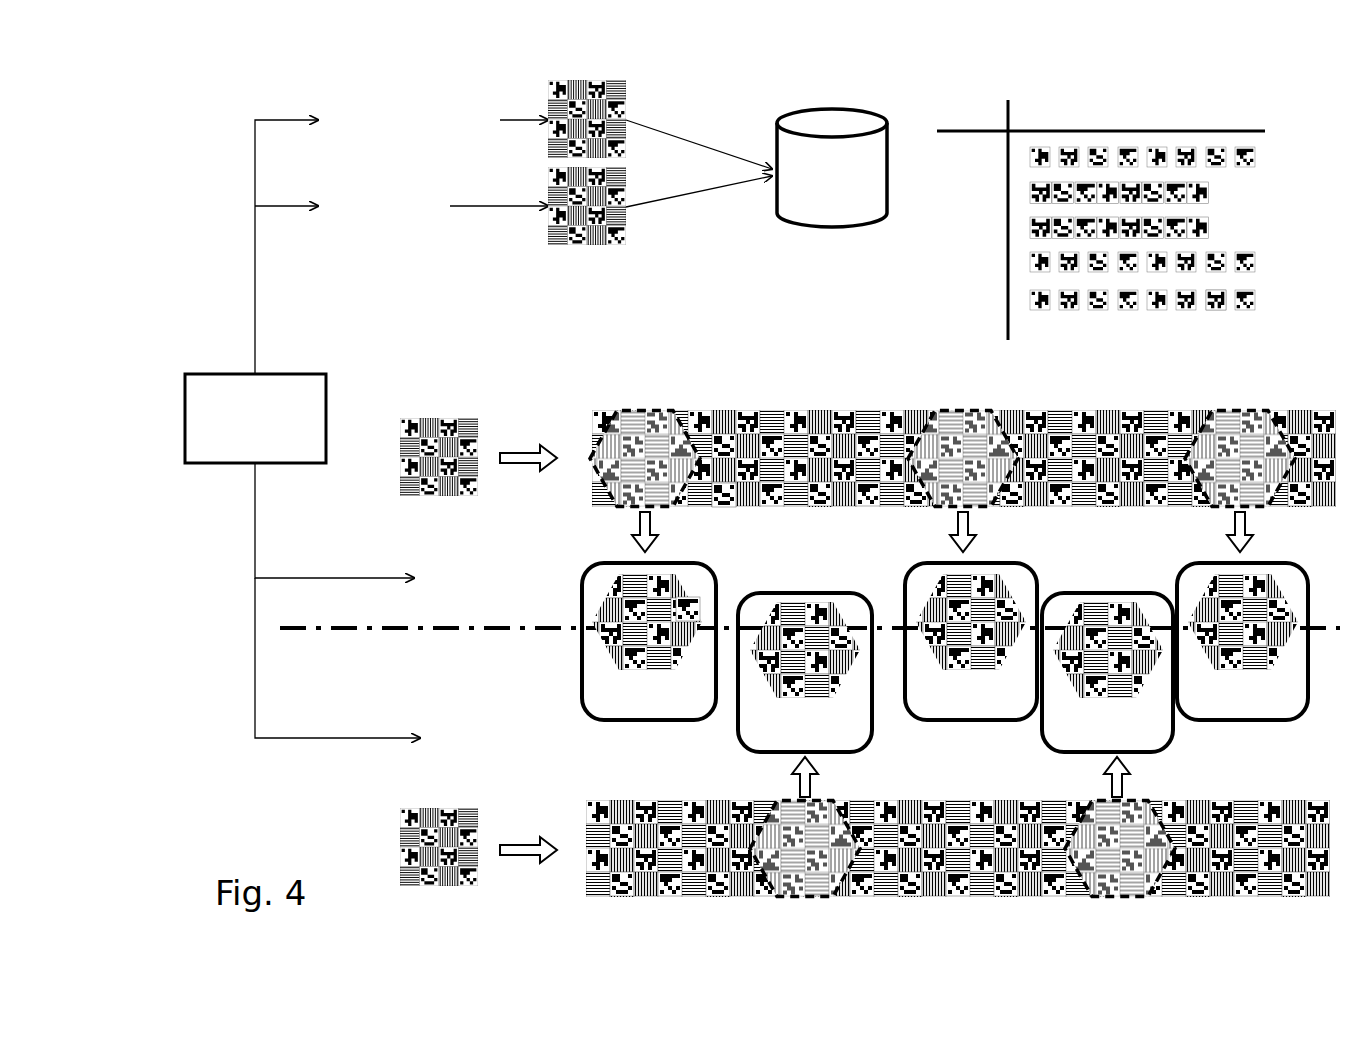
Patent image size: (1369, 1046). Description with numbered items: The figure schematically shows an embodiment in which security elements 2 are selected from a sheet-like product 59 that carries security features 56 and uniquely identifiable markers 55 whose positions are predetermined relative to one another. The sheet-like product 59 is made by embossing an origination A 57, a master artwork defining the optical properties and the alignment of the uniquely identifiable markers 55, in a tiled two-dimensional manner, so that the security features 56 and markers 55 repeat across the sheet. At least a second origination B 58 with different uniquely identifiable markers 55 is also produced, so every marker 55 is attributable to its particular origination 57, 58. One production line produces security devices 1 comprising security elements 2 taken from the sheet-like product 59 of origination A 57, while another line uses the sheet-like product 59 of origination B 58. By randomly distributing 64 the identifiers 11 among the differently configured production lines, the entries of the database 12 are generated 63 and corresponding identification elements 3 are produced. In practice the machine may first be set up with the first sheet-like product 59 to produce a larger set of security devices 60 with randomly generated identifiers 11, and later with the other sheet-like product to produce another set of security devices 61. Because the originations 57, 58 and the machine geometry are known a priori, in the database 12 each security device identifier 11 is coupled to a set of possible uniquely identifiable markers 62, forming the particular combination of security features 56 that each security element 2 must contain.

The security device 1 is at (755, 750).
The security element 2 is at (612, 648).
The identification element 3 is at (823, 728).
The identifier 11 is at (375, 567).
The database 12 is at (830, 238).
The uniquely identifiable marker 55 is at (688, 600).
The security feature 56 is at (700, 498).
The origination A 57 is at (478, 497).
The origination B 58 is at (478, 808).
The sheet-like product 59 is at (1338, 462).
The set of security devices 60 is at (1177, 573).
The another set of security devices 61 is at (1040, 752).
The set of possible uniquely identifiable markers 62 is at (1262, 300).
The generating database entries 63 is at (466, 137).
The random distribution of identifiers 64 is at (232, 463).